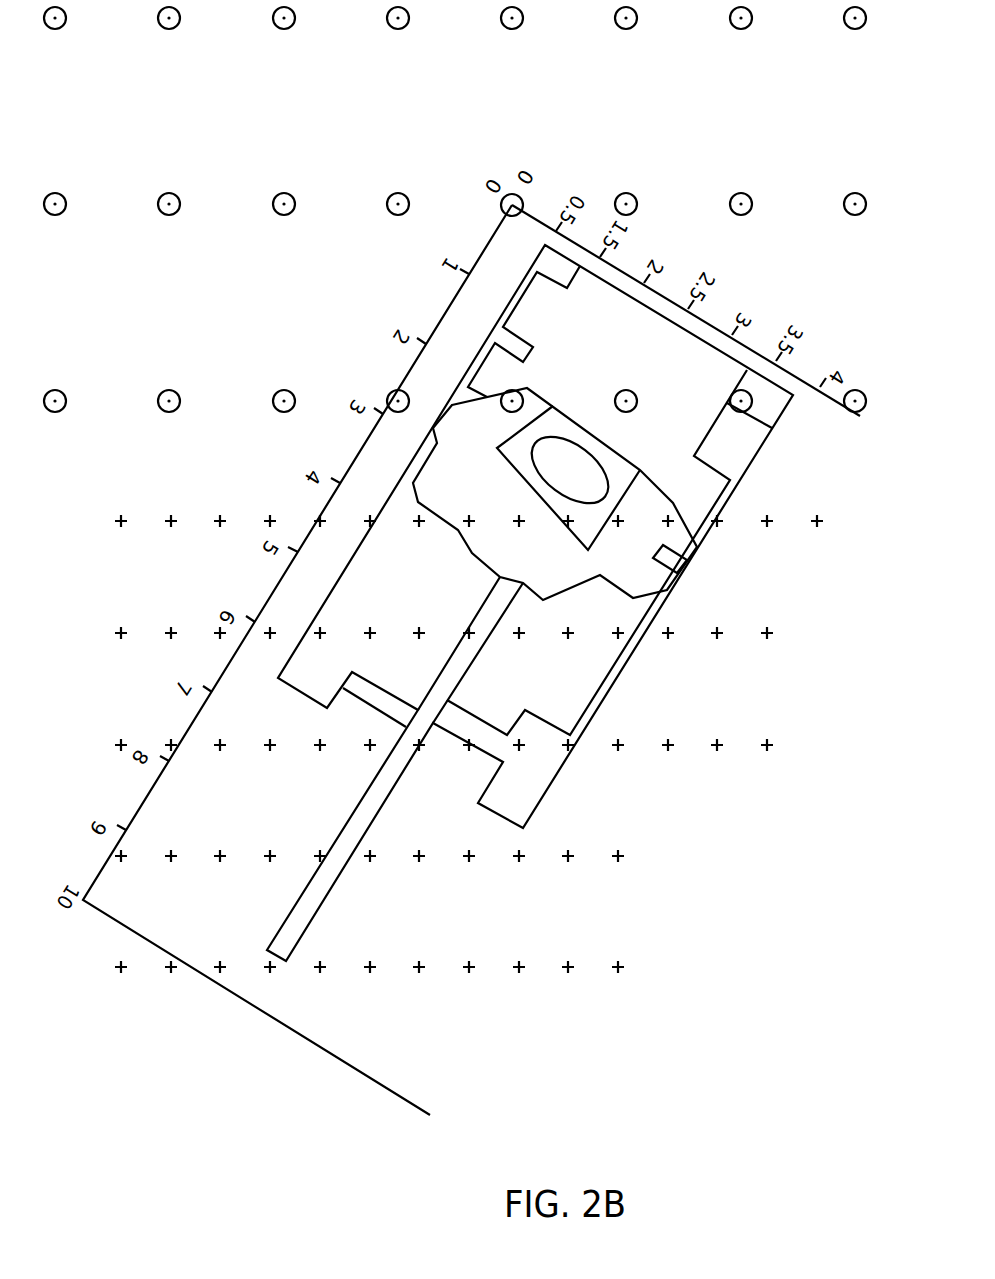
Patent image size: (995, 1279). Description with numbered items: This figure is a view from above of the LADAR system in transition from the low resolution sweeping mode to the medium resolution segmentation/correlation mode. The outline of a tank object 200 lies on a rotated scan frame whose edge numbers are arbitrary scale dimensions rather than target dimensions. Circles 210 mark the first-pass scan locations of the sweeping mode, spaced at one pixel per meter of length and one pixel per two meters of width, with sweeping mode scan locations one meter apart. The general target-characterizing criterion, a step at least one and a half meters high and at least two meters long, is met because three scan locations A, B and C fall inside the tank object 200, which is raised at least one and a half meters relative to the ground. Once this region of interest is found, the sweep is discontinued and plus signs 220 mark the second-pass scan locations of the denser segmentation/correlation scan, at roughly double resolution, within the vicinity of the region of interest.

The tank object 200 is at (570, 660).
The circles 210 is at (58, 222).
The plus signs 220 is at (222, 977).
The scan location A is at (760, 405).
The scan location B is at (625, 384).
The scan location C is at (512, 390).